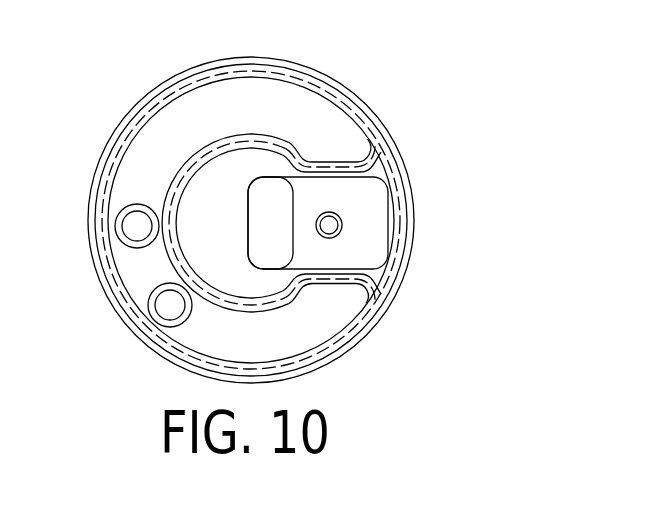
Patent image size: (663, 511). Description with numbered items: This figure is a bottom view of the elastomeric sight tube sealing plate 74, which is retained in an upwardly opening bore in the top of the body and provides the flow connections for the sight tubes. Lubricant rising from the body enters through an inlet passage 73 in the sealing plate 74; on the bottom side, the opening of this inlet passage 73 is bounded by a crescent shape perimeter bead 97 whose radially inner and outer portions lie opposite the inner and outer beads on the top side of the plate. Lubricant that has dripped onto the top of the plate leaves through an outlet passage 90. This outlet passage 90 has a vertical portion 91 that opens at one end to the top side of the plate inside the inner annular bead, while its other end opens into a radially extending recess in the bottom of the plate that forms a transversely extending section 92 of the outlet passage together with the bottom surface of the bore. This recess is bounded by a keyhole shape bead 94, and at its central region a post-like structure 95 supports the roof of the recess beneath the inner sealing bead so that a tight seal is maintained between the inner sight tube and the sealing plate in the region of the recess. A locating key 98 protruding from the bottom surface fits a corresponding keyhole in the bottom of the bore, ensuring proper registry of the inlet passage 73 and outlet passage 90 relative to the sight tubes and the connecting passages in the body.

The sight tube sealing plate 74 is at (149, 83).
The crescent shape perimeter bead 97 is at (121, 154).
The keyhole shape bead 94 is at (396, 212).
The inlet passage 73 is at (133, 227).
The locating key 98 is at (167, 306).
The outlet passage 90 is at (354, 198).
The vertical portion 91 is at (265, 196).
The transversely extending section 92 is at (372, 248).
The post-like structure 95 is at (328, 237).